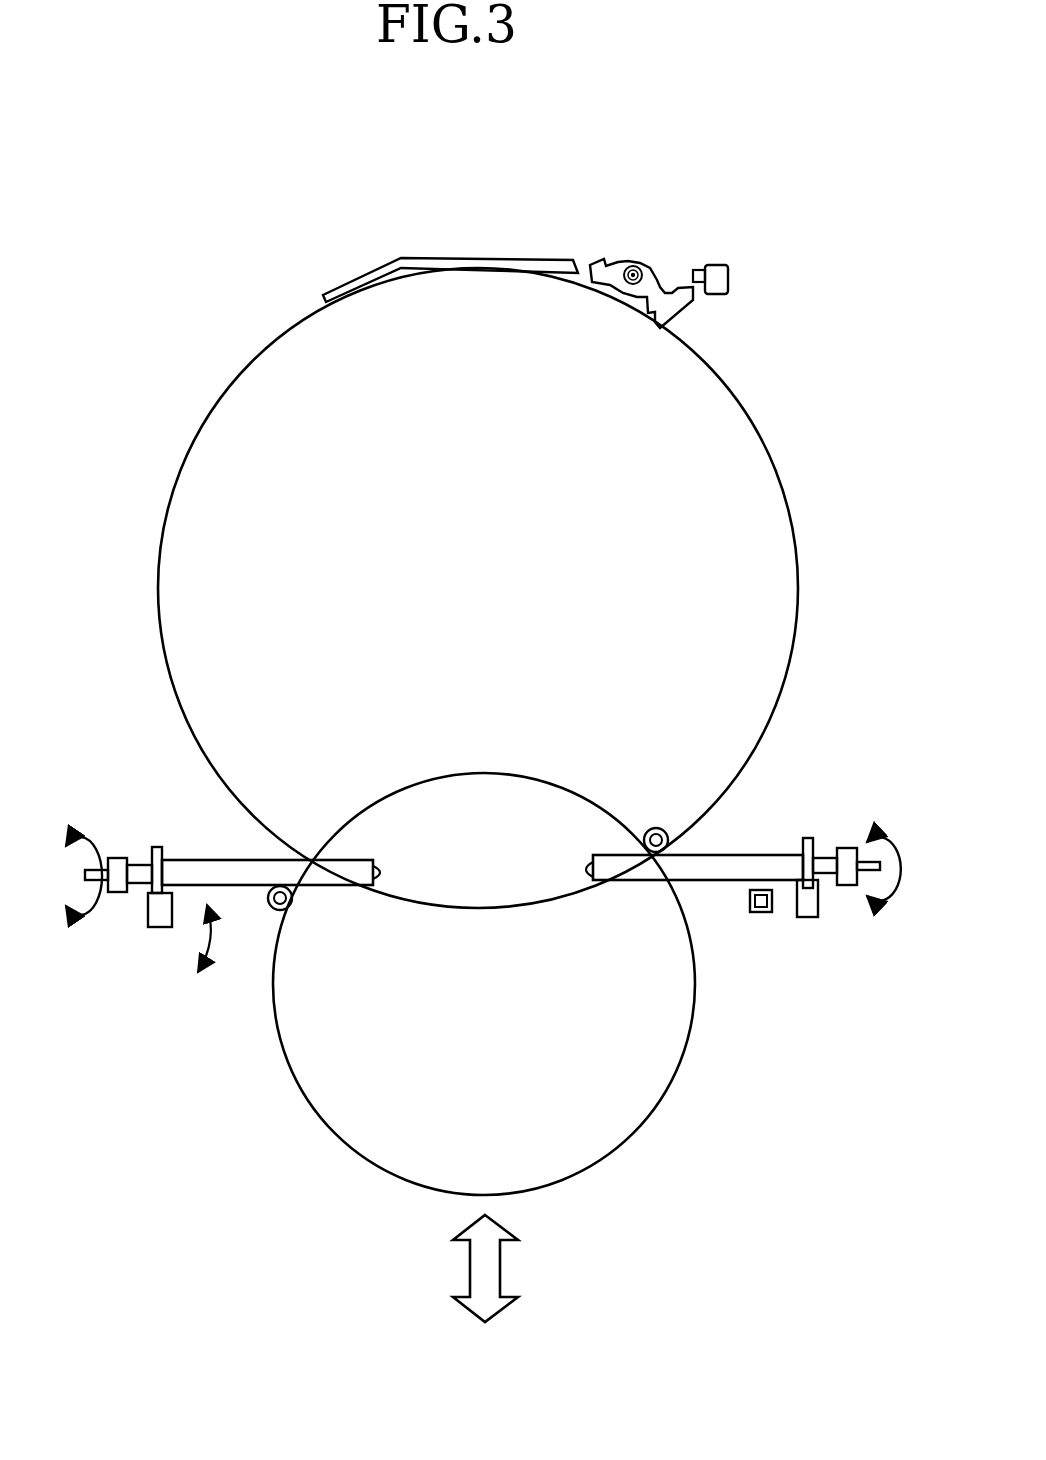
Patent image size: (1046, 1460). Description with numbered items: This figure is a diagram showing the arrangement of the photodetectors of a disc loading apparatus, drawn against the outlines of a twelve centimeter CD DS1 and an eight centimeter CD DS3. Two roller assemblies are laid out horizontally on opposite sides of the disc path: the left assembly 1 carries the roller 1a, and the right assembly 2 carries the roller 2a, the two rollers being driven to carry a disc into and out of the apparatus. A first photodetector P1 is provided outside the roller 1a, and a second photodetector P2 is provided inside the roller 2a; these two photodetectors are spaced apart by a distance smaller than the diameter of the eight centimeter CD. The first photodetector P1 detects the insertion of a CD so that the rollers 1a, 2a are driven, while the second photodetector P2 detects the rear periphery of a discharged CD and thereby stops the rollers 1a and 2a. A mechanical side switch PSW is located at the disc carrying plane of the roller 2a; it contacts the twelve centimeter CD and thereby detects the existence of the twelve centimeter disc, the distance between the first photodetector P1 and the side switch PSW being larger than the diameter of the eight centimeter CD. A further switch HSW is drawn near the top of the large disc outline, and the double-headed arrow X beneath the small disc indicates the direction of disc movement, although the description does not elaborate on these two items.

The first arm (head arm) 1 is at (223, 882).
The roller 1a is at (235, 877).
The second arm 2 is at (743, 830).
The roller 2a is at (758, 862).
The first photodetector P1 is at (277, 912).
The second photodetector P2 is at (655, 827).
The CD of 12 cm diameter DS1 is at (682, 400).
The CD of 8 cm diameter DS3 is at (650, 1068).
The hook switch HSW is at (657, 275).
The mechanical side switch PSW is at (763, 913).
The movement direction X is at (498, 1270).